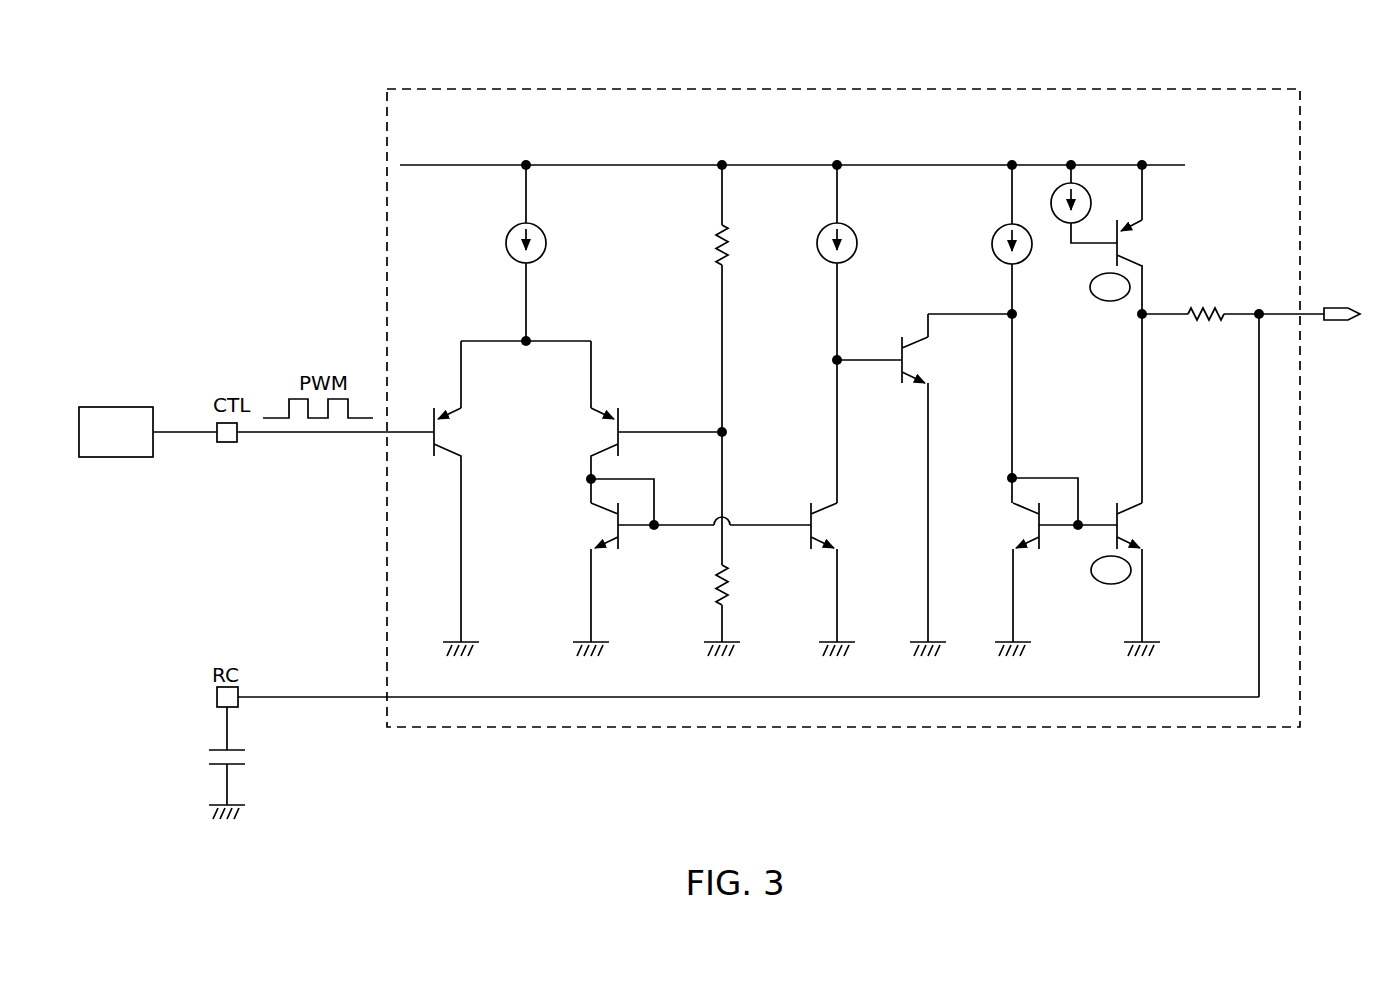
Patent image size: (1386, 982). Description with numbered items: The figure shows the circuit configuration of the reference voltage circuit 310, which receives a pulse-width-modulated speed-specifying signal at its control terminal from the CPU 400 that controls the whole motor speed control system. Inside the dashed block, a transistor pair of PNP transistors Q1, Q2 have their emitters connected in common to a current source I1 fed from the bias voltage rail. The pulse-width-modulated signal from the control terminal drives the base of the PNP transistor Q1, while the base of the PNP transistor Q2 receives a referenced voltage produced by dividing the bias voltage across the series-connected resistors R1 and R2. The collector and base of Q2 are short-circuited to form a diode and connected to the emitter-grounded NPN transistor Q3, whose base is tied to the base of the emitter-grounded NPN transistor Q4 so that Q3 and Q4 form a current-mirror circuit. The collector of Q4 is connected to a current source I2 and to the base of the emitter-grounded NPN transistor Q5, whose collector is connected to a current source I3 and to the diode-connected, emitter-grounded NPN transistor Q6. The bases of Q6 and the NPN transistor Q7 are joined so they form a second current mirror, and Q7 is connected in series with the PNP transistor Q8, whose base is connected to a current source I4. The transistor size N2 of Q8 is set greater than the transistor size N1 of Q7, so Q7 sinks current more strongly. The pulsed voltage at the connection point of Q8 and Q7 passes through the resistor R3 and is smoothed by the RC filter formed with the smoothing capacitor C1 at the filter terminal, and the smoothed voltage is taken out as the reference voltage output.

The reference voltage circuit 310 is at (1008, 89).
The CPU 400 is at (108, 407).
The PNP transistor Q1 is at (461, 498).
The PNP transistor Q2 is at (643, 422).
The NPN transistor Q3 is at (688, 567).
The NPN transistor Q4 is at (837, 579).
The NPN transistor Q5 is at (957, 485).
The NPN transistor Q6 is at (1050, 567).
The NPN transistor Q7 is at (1145, 460).
The PNP transistor Q8 is at (1142, 215).
The resistor R1 is at (740, 298).
The resistor R2 is at (734, 544).
The resistor R3 is at (1206, 300).
The current source I1 is at (536, 253).
The current source I2 is at (859, 334).
The current source I3 is at (1022, 334).
The current source I4 is at (1084, 204).
The smoothing capacitor C1 is at (243, 763).
The transistor size N1 is at (1110, 287).
The transistor size N2 is at (1111, 570).